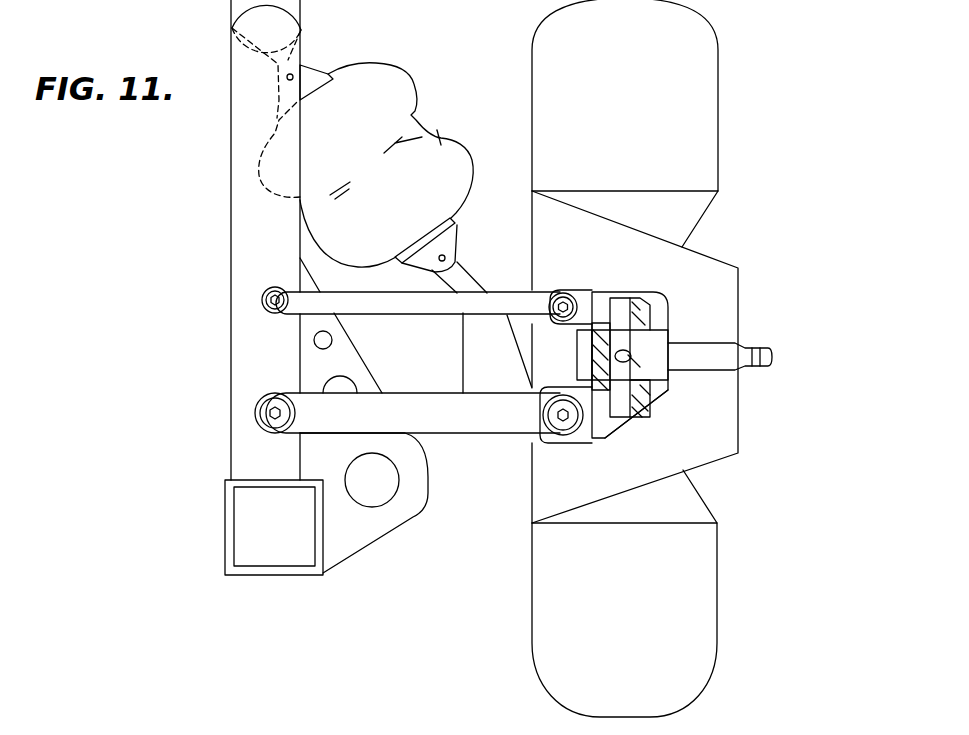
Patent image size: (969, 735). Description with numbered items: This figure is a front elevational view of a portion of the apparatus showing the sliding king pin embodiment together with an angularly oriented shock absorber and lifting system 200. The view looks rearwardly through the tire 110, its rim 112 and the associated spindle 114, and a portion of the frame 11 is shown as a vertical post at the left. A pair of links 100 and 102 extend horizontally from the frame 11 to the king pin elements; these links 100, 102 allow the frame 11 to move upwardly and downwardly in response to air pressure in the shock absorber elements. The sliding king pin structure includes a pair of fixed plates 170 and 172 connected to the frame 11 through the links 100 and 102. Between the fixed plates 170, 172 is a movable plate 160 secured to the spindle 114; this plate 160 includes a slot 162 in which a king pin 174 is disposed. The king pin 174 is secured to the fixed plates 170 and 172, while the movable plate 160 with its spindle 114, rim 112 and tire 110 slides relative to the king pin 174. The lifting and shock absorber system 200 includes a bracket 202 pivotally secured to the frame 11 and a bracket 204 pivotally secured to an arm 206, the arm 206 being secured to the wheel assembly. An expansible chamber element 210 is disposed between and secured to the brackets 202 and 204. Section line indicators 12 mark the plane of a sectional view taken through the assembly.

The frame 11 is at (230, 225).
The section line for FIG. 12 is at (154, 312).
The link 100 is at (507, 292).
The link 102 is at (437, 437).
The tire 110 is at (720, 88).
The rim 112 is at (696, 214).
The spindle 114 is at (717, 353).
The movable plate 160 is at (663, 348).
The slot 162 is at (663, 388).
The fixed plate 170 is at (657, 307).
The fixed plate 172 is at (648, 403).
The king pin 174 is at (618, 412).
The shock absorber and lifting system 200 is at (399, 65).
The bracket 202 is at (313, 72).
The bracket 204 is at (453, 242).
The arm 206 is at (463, 353).
The expansible chamber element 210 is at (440, 137).